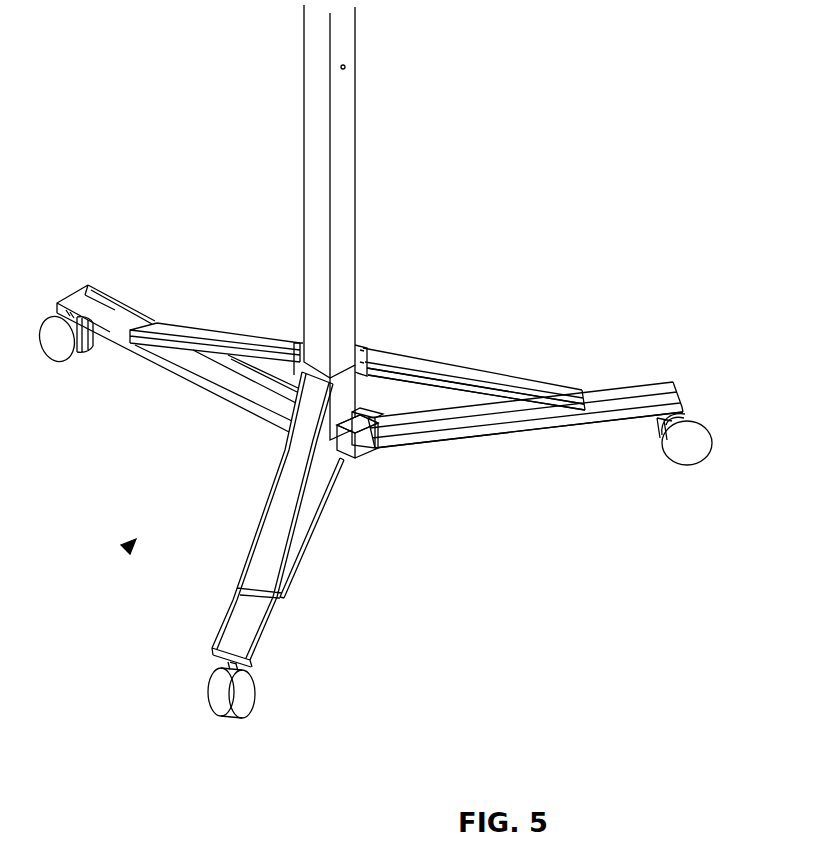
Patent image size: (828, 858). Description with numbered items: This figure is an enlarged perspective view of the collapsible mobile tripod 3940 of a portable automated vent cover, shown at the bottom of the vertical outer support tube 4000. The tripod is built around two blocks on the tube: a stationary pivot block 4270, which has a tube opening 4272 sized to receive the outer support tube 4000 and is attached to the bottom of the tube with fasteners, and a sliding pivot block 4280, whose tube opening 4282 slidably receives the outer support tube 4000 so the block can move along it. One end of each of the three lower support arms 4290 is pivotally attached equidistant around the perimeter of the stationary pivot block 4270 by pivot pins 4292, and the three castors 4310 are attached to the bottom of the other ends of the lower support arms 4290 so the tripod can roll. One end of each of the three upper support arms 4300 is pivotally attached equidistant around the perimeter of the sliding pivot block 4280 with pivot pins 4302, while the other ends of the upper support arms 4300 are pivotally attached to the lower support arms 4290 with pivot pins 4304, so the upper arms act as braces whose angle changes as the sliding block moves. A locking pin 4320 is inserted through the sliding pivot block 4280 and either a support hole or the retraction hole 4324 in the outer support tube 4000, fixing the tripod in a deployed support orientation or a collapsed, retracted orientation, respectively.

The retraction hole 4324 is at (345, 66).
The outer support tube 4000 is at (343, 147).
The sliding pivot block 4280 is at (365, 348).
The tube opening 4282 is at (293, 372).
The pivot pins 4302 is at (372, 392).
The locking pin 4320 is at (485, 395).
The upper support arms 4300 is at (585, 391).
The pivot pins 4304 is at (585, 418).
The castors 4310 is at (55, 342).
The pivot pins 4292 is at (368, 450).
The tube opening 4272 is at (352, 445).
The stationary pivot block 4270 is at (350, 467).
The lower support arms 4290 is at (615, 418).
The collapsible mobile tripod 3940 is at (127, 548).